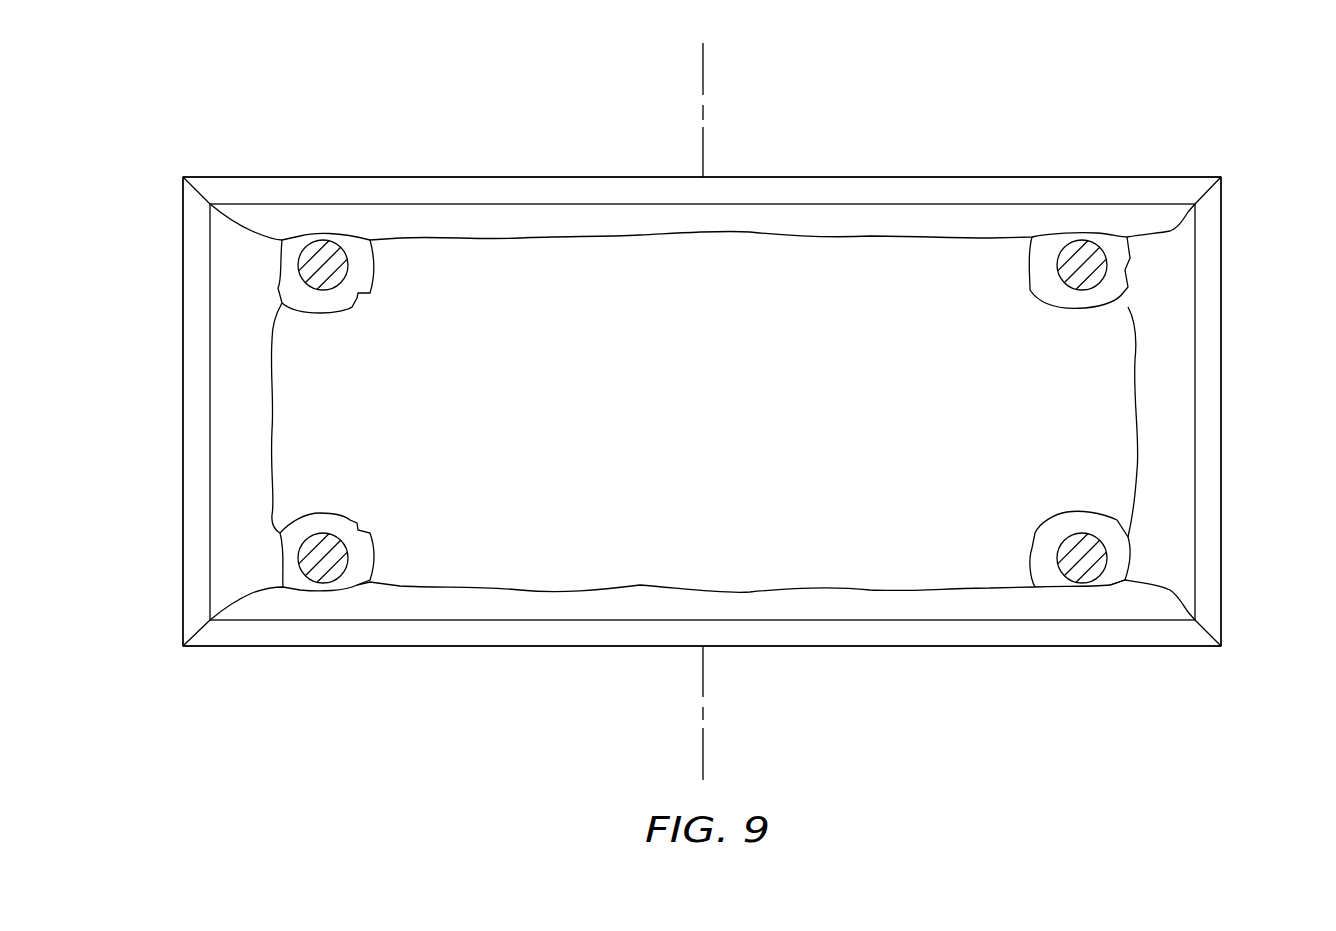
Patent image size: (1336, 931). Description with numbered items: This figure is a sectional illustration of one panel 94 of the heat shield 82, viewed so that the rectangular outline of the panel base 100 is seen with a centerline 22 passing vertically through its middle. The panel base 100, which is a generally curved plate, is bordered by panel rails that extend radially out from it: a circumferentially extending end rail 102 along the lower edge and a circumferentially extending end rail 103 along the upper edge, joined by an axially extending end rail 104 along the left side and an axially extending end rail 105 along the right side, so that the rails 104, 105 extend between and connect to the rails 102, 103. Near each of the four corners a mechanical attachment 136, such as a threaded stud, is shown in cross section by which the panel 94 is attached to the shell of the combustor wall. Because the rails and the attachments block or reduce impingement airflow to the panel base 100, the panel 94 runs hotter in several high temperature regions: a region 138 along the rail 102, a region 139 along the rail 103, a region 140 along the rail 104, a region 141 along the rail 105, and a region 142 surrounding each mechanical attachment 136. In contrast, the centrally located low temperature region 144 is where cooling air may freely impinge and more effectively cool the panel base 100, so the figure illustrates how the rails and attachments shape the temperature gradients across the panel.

The central axis 22 is at (703, 57).
The heat shield 82 is at (702, 351).
The panel 94 is at (1098, 136).
The panel base 100 is at (992, 218).
The circumferentially extending end rail 102 is at (305, 633).
The circumferentially extending end rail 103 is at (319, 185).
The axially extending end rail 104 is at (198, 292).
The axially extending end rail 105 is at (1210, 287).
The mechanical attachment 136 is at (337, 290).
The high temperature region 138 is at (640, 592).
The high temperature region 139 is at (628, 222).
The high temperature region 140 is at (233, 460).
The high temperature region 141 is at (1165, 478).
The high temperature region 142 is at (363, 273).
The low temperature region 144 is at (728, 429).